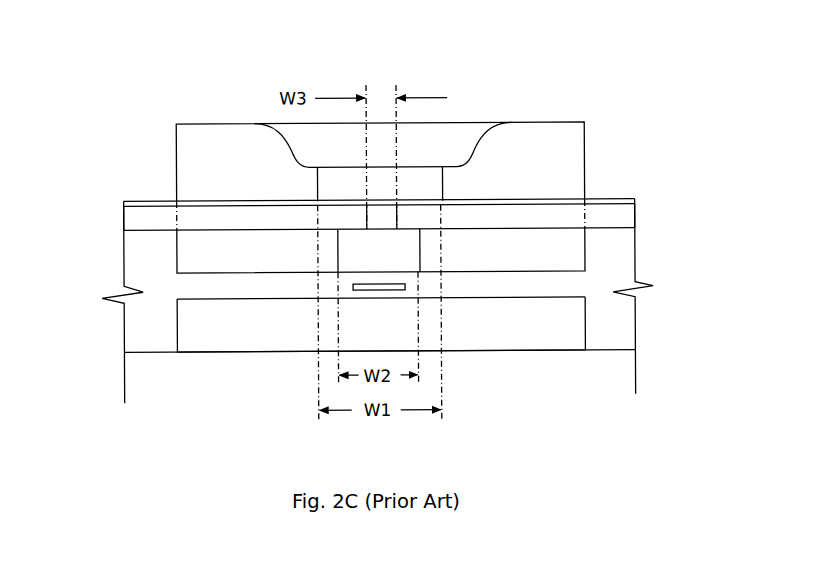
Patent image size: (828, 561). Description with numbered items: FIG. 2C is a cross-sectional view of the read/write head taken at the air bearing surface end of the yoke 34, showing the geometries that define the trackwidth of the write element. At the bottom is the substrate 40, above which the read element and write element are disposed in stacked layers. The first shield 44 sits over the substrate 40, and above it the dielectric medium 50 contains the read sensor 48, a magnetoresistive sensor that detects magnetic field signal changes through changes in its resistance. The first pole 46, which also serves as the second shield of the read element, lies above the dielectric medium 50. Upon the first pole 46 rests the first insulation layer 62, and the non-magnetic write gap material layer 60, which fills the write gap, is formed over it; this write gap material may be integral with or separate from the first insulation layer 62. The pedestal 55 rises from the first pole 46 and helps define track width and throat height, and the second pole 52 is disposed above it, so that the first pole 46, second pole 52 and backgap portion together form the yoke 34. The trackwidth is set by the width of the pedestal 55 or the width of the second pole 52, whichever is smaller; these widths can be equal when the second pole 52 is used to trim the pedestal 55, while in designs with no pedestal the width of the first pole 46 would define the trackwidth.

The magnetic yoke 34 is at (568, 118).
The second pole 52 is at (448, 142).
The write gap material layer 60 is at (637, 199).
The first insulation layer 62 is at (627, 218).
The pedestal 55 is at (375, 215).
The first pole 46 is at (217, 250).
The read sensor 48 is at (405, 288).
The dielectric medium 50 is at (578, 280).
The first shield 44 is at (505, 349).
The substrate 40 is at (607, 387).